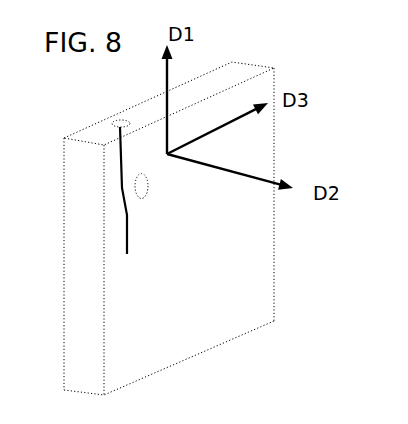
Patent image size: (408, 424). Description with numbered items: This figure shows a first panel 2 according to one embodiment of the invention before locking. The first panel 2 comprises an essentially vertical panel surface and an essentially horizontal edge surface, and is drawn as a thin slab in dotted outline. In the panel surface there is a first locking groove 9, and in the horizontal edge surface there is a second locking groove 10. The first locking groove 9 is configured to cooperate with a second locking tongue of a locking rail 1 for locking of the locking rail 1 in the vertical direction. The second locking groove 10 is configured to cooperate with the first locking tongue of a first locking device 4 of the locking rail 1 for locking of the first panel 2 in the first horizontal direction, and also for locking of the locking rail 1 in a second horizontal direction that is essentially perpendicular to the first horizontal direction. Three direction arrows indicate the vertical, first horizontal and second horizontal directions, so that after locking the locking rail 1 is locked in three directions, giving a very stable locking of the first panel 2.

The first panel 2 is at (225, 300).
The first locking groove 9 is at (143, 182).
The second locking groove 10 is at (122, 207).
The first locking device 4 is at (231, 417).
The locking rail 1 is at (361, 417).